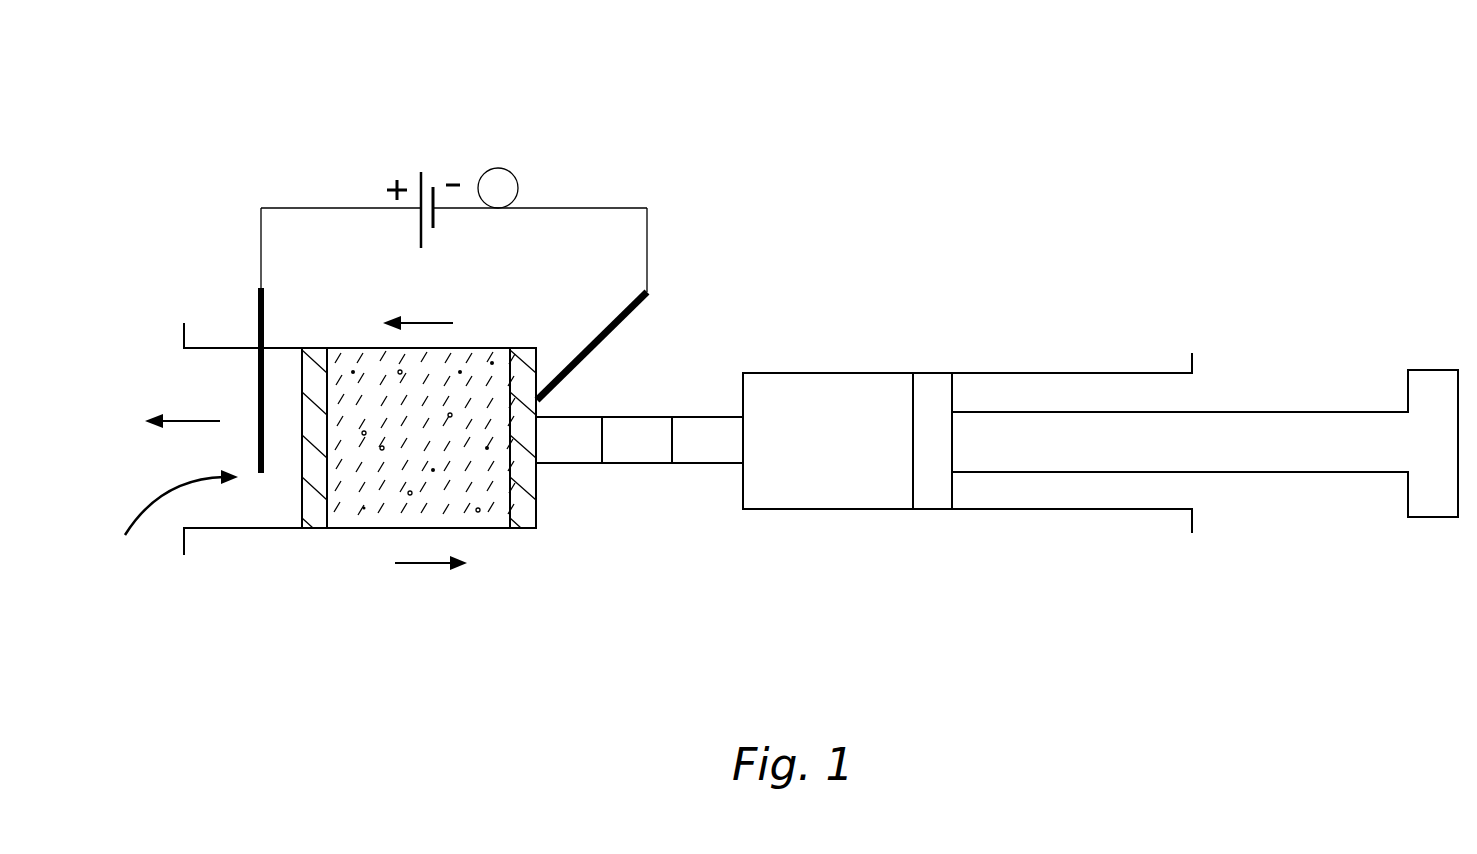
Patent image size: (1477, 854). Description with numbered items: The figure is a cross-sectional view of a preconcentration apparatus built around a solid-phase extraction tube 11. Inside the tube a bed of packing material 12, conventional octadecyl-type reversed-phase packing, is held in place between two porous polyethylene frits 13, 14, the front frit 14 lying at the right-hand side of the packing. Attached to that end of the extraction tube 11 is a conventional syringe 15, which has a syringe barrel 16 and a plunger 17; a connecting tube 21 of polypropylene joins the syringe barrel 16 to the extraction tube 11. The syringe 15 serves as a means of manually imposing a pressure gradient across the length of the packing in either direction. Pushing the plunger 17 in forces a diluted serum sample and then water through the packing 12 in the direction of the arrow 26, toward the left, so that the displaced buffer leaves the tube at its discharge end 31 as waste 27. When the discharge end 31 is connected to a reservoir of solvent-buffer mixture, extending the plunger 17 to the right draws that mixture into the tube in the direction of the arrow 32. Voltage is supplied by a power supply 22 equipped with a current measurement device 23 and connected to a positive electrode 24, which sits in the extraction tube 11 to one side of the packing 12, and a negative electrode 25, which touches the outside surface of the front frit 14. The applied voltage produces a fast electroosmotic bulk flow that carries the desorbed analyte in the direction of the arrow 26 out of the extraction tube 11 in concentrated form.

The solid-phase extraction tube 11 is at (223, 348).
The packing material 12 is at (383, 515).
The porous polyethylene frit 13 is at (317, 528).
The front frit 14 is at (523, 530).
The syringe 15 is at (1070, 292).
The syringe barrel 16 is at (812, 373).
The plunger 17 is at (1240, 472).
The connecting tube 21 is at (843, 510).
The power supply 22 is at (440, 163).
The current measurement device 23 is at (510, 172).
The positive electrode 24 is at (261, 305).
The negative electrode 25 is at (603, 342).
The arrow 26 is at (418, 322).
The waste 27 is at (187, 420).
The discharge end 31 is at (162, 527).
The arrow 32 is at (432, 565).